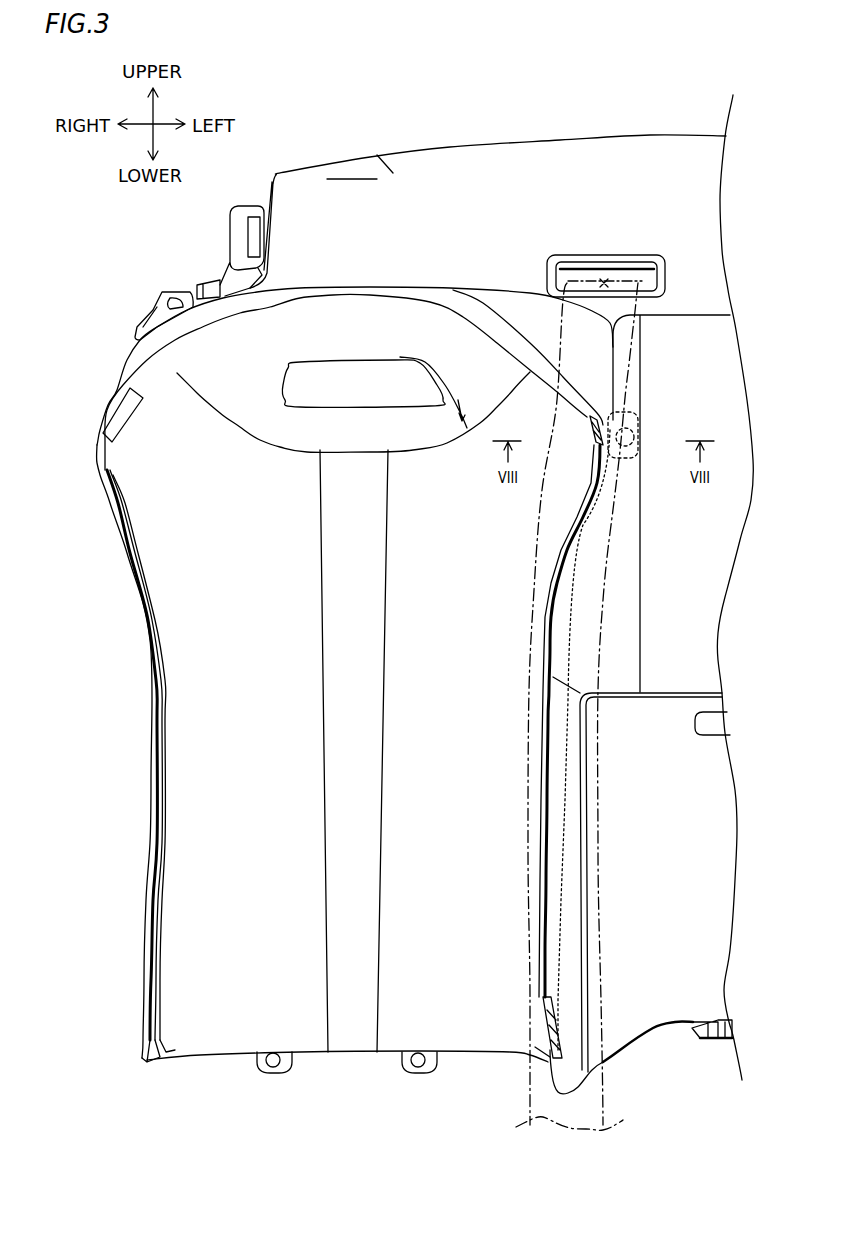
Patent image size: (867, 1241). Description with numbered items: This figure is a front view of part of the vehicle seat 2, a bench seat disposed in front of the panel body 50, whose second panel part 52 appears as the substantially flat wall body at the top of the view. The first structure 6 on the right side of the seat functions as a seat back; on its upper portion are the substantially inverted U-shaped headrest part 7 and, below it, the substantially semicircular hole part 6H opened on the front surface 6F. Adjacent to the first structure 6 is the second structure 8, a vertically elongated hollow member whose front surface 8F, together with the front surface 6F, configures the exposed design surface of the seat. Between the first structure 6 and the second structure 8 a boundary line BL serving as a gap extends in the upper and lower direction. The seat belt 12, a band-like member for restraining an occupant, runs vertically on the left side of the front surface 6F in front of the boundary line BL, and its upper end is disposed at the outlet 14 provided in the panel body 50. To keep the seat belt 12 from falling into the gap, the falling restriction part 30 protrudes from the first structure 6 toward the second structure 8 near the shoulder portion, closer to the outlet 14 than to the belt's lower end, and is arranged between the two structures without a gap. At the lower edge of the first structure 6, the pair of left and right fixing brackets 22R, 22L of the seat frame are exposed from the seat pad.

The vehicle seat 2 is at (384, 665).
The first structure 6 is at (142, 696).
The front surface of the first structure 6F is at (362, 694).
The hole part 6H is at (292, 423).
The headrest part 7 is at (225, 357).
The second structure 8 is at (731, 590).
The front surface of the second structure 8F is at (698, 661).
The seat belt 12 is at (523, 694).
The outlet 14 is at (609, 274).
The right fixing bracket 22R is at (273, 1072).
The left fixing bracket 22L is at (418, 1072).
The falling restriction part 30 is at (630, 428).
The panel body 50 is at (488, 165).
The second panel part 52 is at (430, 209).
The boundary line BL is at (552, 555).